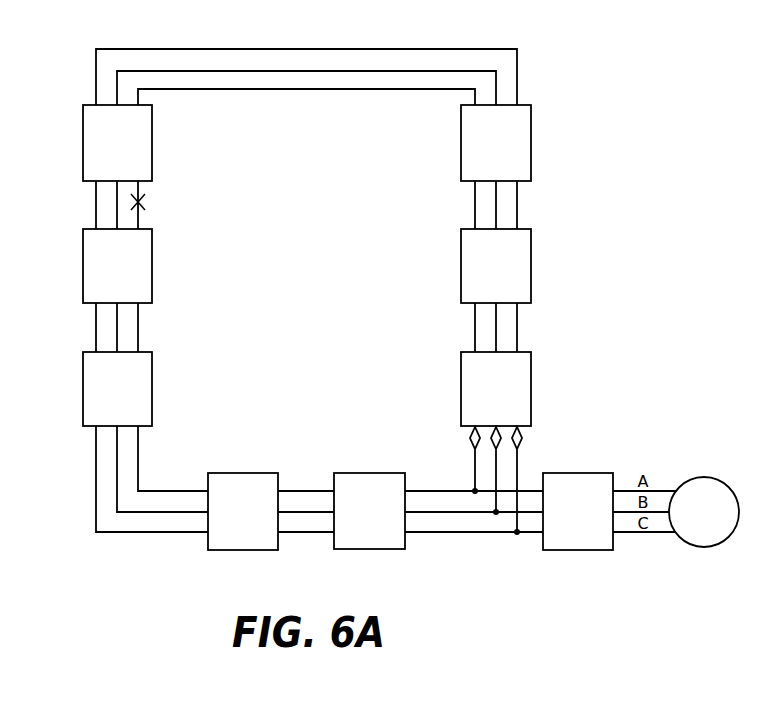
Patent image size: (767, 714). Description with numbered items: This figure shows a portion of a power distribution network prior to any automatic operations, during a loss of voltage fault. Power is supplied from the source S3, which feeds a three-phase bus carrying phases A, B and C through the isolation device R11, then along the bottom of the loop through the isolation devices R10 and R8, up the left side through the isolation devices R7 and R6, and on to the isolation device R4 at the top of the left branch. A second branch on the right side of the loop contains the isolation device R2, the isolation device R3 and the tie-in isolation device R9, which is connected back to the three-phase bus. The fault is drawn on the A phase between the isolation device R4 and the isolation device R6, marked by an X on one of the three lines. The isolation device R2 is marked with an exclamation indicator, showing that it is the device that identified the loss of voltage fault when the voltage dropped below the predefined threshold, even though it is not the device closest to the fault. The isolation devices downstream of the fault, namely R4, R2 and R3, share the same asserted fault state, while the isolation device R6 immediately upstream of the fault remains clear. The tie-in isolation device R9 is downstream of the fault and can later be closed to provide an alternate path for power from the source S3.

The isolation device R2 is at (484, 139).
The isolation device R3 is at (484, 276).
The isolation device R4 is at (117, 143).
The isolation device R6 is at (117, 266).
The isolation device R7 is at (117, 389).
The isolation device R8 is at (243, 511).
The isolation device R9 is at (496, 389).
The isolation device R10 is at (369, 511).
The isolation device R11 is at (578, 511).
The source S3 is at (704, 512).